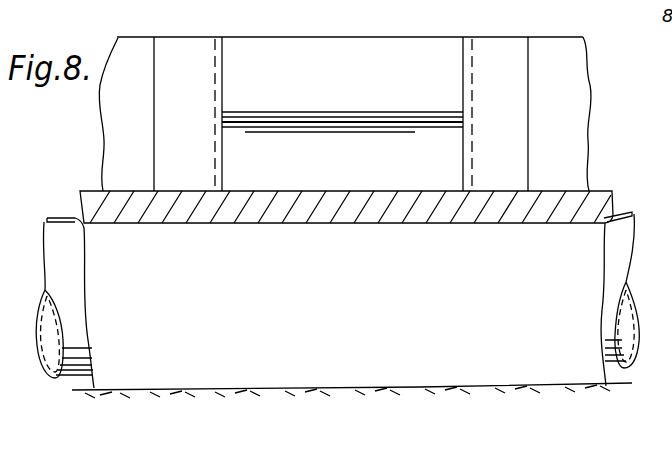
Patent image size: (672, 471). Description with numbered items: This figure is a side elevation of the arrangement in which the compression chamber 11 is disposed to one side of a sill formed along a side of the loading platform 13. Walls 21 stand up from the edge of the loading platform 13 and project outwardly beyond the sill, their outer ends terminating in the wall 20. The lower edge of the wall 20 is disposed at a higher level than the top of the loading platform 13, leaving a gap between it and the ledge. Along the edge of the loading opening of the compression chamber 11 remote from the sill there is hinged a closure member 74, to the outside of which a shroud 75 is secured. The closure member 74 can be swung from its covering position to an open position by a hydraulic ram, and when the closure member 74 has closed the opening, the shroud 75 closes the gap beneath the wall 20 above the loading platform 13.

The compression chamber 11 is at (60, 238).
The loading platform 13 is at (94, 210).
The wall 20 is at (286, 80).
The walls 21 is at (218, 90).
The closure member 74 is at (323, 152).
The shroud 75 is at (375, 113).